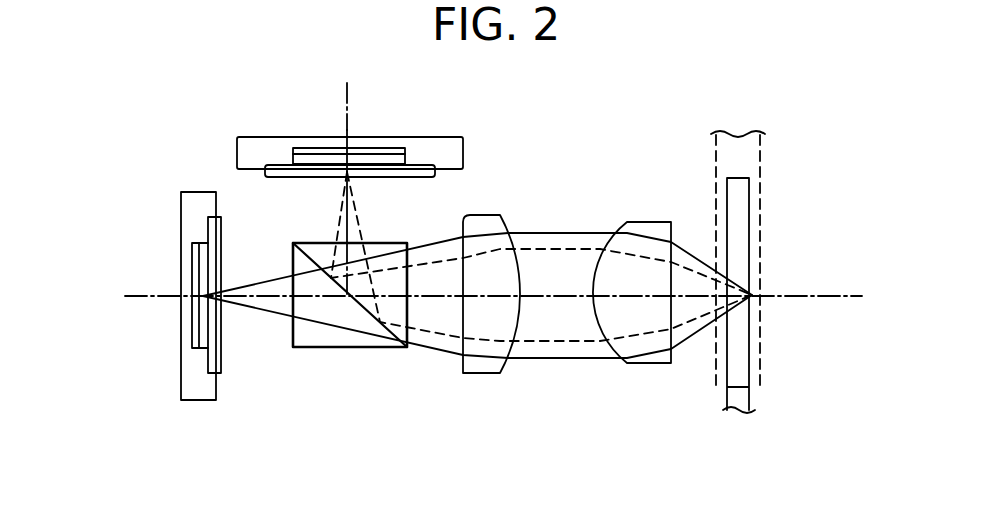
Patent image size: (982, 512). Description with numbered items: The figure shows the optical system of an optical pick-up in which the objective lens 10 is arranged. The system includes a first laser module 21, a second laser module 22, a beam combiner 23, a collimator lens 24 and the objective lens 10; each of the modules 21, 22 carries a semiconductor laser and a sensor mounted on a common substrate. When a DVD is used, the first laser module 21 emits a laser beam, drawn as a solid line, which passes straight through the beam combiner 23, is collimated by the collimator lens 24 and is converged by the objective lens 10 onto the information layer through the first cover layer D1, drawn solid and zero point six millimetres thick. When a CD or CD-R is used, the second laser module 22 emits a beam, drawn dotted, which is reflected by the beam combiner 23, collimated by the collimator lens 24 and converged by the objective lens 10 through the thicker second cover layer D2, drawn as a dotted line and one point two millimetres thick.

The first laser module 21 is at (200, 399).
The second laser module 22 is at (452, 152).
The beam combiner 23 is at (349, 348).
The collimator lens 24 is at (480, 374).
The objective lens 10 is at (652, 364).
The first cover layer D1 is at (733, 370).
The second cover layer D2 is at (762, 358).